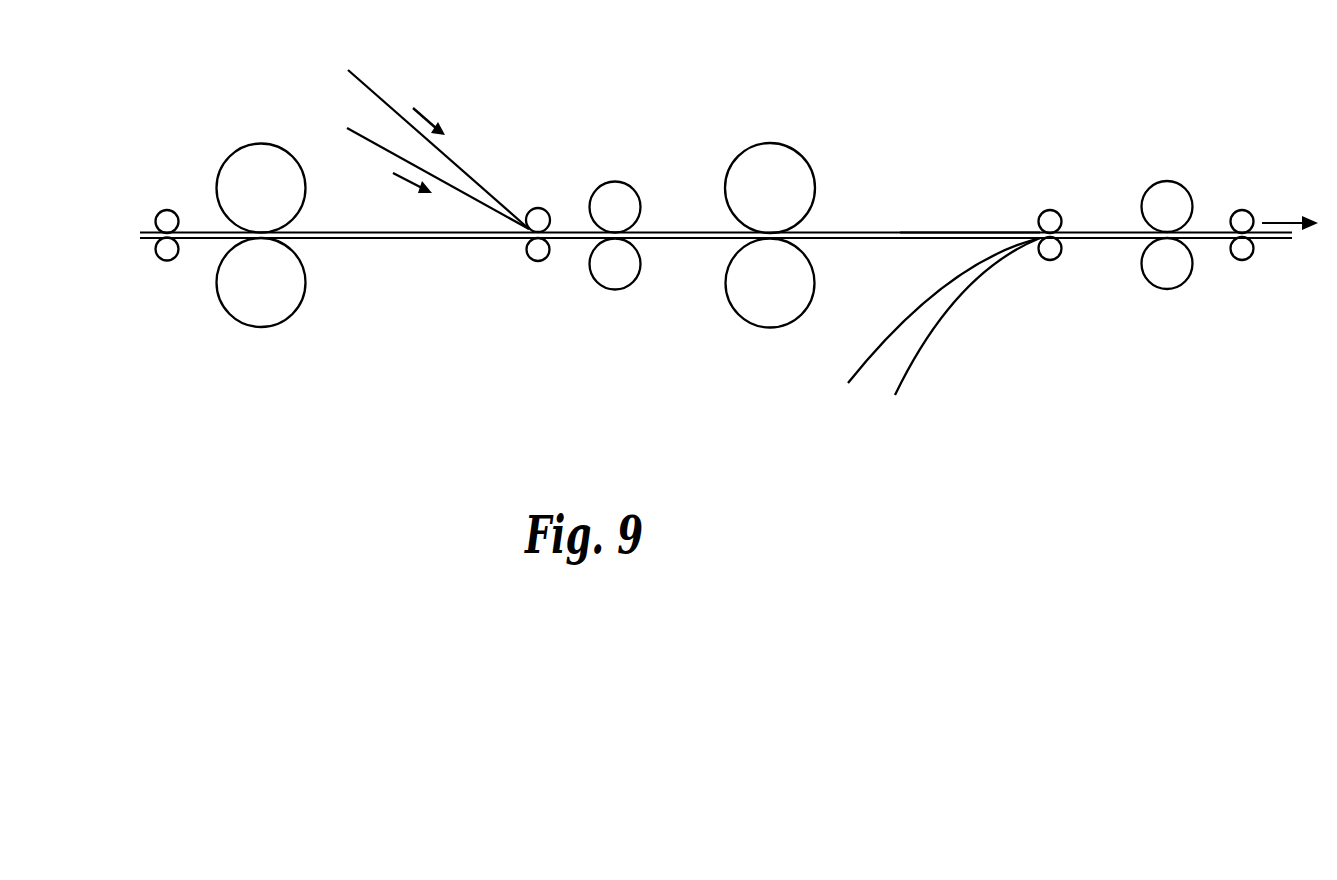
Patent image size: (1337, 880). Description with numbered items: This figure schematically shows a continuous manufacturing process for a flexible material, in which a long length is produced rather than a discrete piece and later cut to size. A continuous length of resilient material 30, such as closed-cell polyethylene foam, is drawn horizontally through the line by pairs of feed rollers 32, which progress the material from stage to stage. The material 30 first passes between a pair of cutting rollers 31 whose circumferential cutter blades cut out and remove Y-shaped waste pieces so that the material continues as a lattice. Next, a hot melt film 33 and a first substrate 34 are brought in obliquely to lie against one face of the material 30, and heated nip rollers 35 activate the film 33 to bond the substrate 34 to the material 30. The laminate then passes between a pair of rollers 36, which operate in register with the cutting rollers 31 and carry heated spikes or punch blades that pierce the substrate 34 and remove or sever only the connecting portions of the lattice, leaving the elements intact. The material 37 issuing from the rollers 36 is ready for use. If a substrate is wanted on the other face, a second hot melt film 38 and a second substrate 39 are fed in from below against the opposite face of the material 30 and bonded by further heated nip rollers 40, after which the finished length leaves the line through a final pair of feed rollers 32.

The resilient material 30 is at (212, 238).
The cutting rollers 31 is at (248, 153).
The feed rollers 32 is at (162, 220).
The hot melt film 33 is at (363, 132).
The first substrate 34 is at (365, 82).
The heated nip rollers 35 is at (618, 182).
The rollers 36 is at (800, 170).
The material 37 is at (907, 232).
The hot melt film 38 is at (888, 340).
The substrate 39 is at (933, 337).
The heated nip rollers 40 is at (1168, 180).